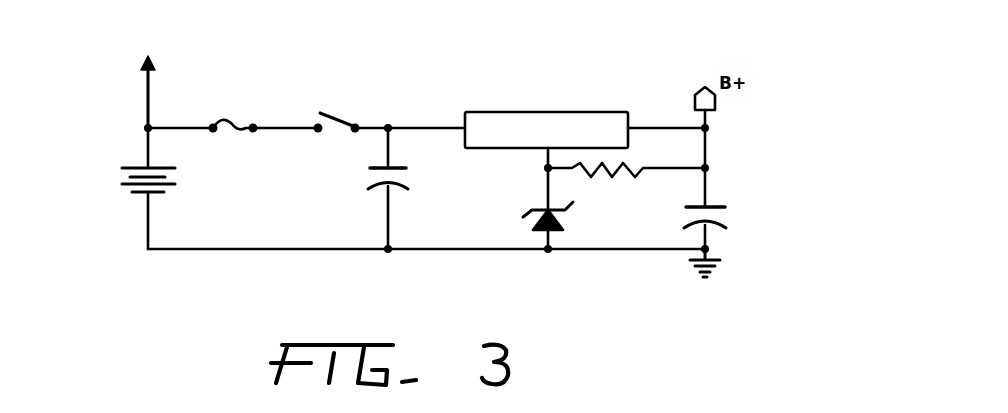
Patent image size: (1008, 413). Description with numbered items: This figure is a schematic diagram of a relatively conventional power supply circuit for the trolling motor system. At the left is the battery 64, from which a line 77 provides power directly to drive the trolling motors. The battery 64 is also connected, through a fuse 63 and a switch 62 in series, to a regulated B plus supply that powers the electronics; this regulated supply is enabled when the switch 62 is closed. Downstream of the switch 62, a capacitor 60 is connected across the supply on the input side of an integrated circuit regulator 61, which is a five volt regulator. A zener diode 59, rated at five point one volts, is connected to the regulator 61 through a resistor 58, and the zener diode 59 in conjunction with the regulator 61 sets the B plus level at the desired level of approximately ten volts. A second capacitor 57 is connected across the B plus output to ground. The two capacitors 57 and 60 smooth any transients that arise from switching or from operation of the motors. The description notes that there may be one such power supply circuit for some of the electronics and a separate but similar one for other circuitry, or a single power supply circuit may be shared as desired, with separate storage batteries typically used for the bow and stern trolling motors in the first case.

The capacitor 57 is at (727, 213).
The resistor 58 is at (601, 174).
The zener diode 59 is at (540, 208).
The capacitor 60 is at (368, 182).
The integrated circuit regulator 61 is at (530, 112).
The switch 62 is at (342, 124).
The fuse 63 is at (240, 133).
The battery 64 is at (130, 187).
The line 77 is at (147, 93).